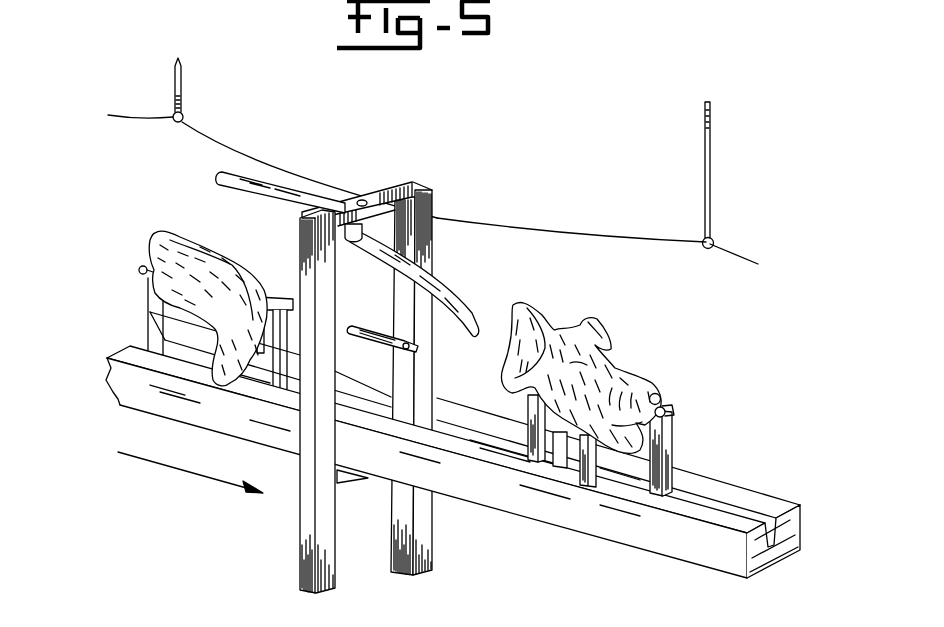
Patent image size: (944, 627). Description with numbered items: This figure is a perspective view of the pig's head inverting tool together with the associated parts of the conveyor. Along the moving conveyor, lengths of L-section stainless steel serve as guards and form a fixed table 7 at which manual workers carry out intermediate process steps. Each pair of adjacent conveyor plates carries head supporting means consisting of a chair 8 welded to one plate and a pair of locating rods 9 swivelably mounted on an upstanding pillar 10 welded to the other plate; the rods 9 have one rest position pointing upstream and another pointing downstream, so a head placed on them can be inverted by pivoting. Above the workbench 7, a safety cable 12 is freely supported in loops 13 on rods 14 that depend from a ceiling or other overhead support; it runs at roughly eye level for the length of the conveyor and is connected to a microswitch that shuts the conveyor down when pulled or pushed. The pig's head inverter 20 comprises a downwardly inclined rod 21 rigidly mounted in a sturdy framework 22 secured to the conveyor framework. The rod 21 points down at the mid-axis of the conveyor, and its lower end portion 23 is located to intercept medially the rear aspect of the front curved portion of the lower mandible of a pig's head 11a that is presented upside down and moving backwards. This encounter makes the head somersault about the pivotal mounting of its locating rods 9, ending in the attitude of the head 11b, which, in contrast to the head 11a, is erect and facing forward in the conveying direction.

The table 7 is at (600, 490).
The chair 8 is at (528, 418).
The locating rods 9 is at (672, 405).
The upstanding pillar 10 is at (675, 453).
The pig's head 11a is at (207, 250).
The pig's head 11b is at (622, 372).
The safety cable 12 is at (566, 238).
The loops 13 is at (713, 238).
The rods 14 is at (711, 194).
The pig's head inverter 20 is at (441, 193).
The downwardly inclined rod 21 is at (452, 285).
The framework 22 is at (303, 557).
The lower end portion 23 is at (477, 336).